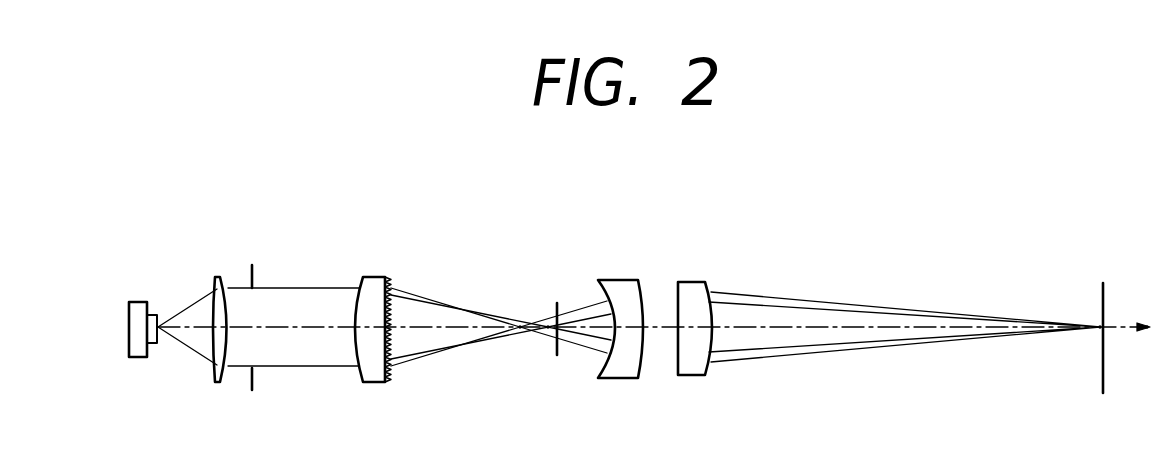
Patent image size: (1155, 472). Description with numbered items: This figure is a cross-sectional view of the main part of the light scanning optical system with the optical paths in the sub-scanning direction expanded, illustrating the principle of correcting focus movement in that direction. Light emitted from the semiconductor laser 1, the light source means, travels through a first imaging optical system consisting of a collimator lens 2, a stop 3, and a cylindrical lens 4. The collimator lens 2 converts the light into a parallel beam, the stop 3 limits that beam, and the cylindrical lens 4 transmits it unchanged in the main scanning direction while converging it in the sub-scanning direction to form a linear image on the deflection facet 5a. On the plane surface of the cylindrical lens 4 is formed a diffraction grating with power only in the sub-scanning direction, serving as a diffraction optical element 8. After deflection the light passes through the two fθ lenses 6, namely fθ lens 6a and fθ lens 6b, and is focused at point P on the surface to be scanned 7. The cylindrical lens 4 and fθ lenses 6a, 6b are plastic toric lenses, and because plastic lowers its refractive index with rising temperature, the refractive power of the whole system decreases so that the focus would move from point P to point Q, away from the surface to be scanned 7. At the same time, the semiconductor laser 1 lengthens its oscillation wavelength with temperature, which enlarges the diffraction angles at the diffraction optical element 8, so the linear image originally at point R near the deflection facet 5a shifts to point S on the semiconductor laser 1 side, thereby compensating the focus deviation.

The semiconductor laser 1 is at (140, 298).
The collimator lens 2 is at (216, 272).
The stop 3 is at (253, 264).
The cylindrical lens 4 is at (374, 283).
The diffraction optical element 8 is at (393, 290).
The point S is at (510, 338).
The point R is at (547, 338).
The deflection facet 5a is at (555, 302).
The fθ lenses 6 is at (608, 193).
The fθ lens 6a is at (623, 287).
The fθ lens 6b is at (690, 287).
The surface to be scanned 7 is at (1105, 300).
The point P is at (1100, 335).
The point Q is at (1146, 334).